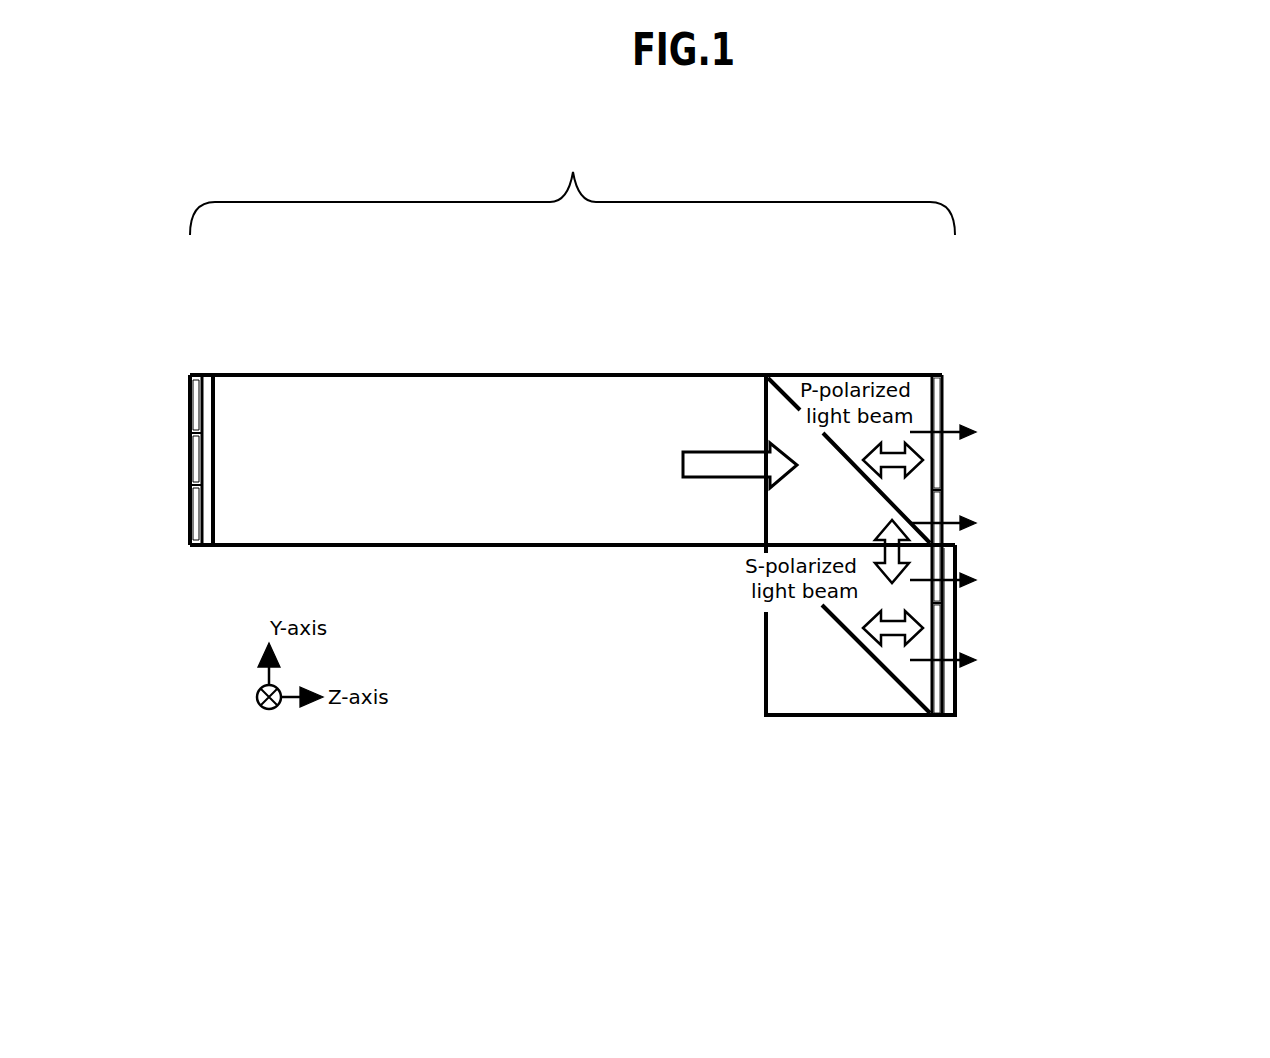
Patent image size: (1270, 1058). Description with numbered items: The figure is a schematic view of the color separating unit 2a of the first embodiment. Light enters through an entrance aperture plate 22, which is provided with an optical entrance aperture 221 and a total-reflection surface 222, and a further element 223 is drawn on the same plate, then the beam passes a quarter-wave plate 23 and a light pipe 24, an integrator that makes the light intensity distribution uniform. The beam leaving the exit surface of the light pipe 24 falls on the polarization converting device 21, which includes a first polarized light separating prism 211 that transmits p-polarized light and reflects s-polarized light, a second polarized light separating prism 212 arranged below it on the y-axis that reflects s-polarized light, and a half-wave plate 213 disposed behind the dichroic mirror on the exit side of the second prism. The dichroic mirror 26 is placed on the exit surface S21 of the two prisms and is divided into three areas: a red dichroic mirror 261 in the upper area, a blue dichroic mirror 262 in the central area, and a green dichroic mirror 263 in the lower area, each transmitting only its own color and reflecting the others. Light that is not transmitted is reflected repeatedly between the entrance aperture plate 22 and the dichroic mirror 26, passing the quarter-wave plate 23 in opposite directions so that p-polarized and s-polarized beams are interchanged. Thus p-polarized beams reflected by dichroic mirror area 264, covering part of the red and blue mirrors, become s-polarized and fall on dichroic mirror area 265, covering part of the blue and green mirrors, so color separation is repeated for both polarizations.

The color separating unit 2a is at (572, 189).
The polarization converting device 21 is at (777, 647).
The first polarized light separating prism 211 is at (853, 475).
The second polarized light separating prism 212 is at (842, 635).
The half-wave plate 213 is at (882, 705).
The exit surface S21 is at (935, 375).
The entrance aperture plate 22 is at (297, 460).
The optical entrance aperture 221 is at (193, 454).
The total-reflection surface 222 is at (261, 513).
The third solid-state light source 223 is at (193, 413).
The quarter-wave plate 23 is at (218, 393).
The light pipe 24 is at (468, 393).
The dichroic mirror 26 is at (981, 499).
The red dichroic mirror 261 is at (945, 388).
The blue dichroic mirror 262 is at (980, 593).
The green dichroic mirror 263 is at (945, 618).
The dichroic mirror area 264 is at (1160, 367).
The dichroic mirror area 265 is at (1160, 548).